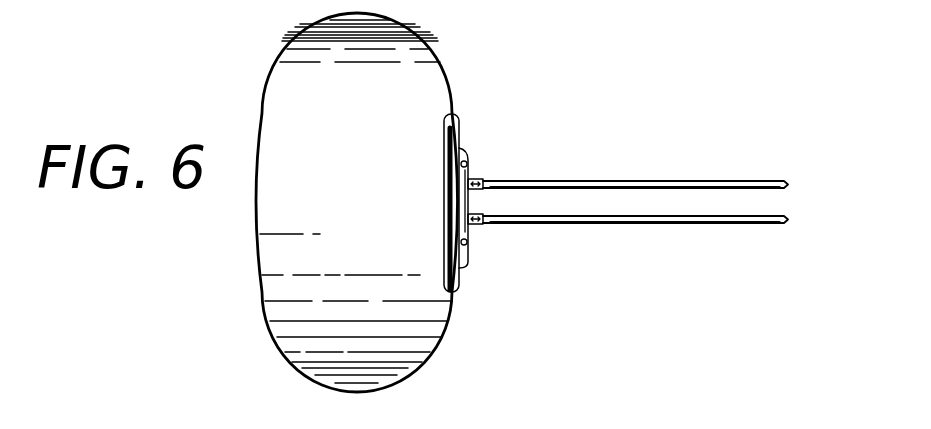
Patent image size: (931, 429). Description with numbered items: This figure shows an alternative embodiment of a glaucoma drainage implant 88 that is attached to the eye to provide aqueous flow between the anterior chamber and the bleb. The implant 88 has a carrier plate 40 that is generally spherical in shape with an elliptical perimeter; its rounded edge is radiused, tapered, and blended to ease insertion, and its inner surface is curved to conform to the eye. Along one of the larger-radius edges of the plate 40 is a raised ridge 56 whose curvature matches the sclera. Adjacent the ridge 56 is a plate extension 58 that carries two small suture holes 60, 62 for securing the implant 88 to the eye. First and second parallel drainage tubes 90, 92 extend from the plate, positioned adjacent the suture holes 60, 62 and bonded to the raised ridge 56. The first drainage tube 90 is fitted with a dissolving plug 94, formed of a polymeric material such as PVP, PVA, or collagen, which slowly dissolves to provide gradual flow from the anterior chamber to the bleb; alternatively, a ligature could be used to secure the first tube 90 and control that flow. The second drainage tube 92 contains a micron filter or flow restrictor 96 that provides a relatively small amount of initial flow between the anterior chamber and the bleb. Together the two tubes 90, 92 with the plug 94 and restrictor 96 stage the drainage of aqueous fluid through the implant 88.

The implant 88 is at (228, 62).
The carrier plate 40 is at (433, 77).
The raised ridge 56 is at (458, 123).
The plate extension 58 is at (471, 156).
The suture hole 60 is at (446, 150).
The suture hole 62 is at (461, 234).
The first drainage tube 90 is at (731, 183).
The second drainage tube 92 is at (733, 224).
The dissolving plug 94 is at (481, 178).
The flow restrictor 96 is at (490, 224).